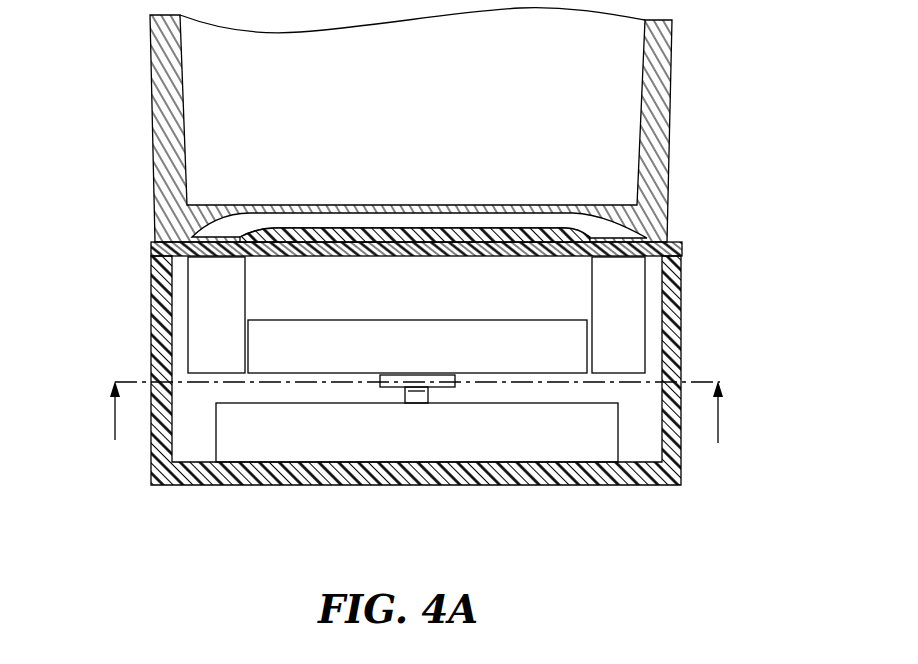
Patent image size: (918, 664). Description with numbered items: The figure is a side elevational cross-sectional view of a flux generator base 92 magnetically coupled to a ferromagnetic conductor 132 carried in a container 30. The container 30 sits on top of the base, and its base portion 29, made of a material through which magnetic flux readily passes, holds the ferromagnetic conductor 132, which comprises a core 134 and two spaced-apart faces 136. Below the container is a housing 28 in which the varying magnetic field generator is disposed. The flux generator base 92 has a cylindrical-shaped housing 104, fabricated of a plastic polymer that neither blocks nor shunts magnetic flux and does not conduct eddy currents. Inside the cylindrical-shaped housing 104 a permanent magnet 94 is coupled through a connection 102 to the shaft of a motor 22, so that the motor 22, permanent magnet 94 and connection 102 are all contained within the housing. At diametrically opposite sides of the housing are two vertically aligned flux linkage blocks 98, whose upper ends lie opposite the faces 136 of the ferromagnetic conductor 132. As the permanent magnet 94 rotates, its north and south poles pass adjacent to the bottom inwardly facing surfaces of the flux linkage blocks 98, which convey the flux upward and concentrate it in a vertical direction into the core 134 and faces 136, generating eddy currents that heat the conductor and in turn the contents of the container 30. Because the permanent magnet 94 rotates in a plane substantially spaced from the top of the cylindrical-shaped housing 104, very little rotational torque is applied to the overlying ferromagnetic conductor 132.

The container 30 is at (762, 84).
The base portion 29 is at (661, 229).
The ferromagnetic conductor 132 is at (338, 167).
The core 134 is at (488, 210).
The housing 28 is at (366, 241).
The faces 136 is at (674, 243).
The cylindrical-shaped housing 104 is at (683, 281).
The flux generator base 92 is at (428, 402).
The flux linkage blocks 98 is at (192, 328).
The permanent magnet 94 is at (308, 363).
The connection 102 is at (388, 388).
The motor 22 is at (537, 450).